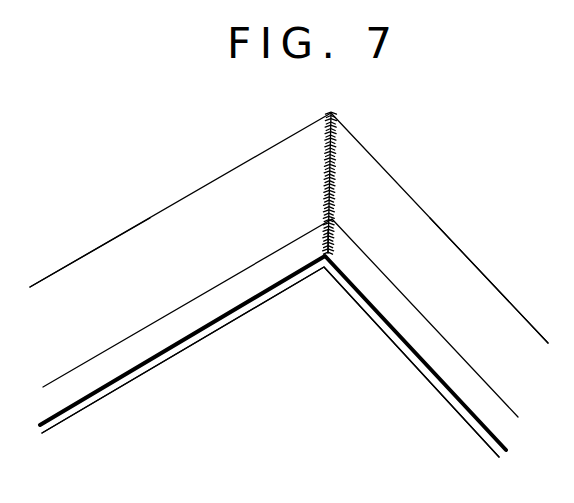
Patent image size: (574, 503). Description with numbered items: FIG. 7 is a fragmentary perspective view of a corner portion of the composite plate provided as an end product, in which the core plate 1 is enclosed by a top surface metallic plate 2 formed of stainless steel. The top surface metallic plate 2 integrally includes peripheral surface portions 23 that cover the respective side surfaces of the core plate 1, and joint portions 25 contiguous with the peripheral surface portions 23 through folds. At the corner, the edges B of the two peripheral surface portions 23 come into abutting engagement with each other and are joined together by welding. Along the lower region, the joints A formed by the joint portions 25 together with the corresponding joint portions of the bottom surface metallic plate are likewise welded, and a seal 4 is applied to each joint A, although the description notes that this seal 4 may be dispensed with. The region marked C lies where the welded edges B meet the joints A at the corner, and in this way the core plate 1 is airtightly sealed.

The top surface metallic plate 2 is at (165, 200).
The peripheral surface portions 23 is at (92, 271).
The edges B is at (335, 173).
The corner joint region C is at (316, 243).
The joints A is at (226, 333).
The seal 4 is at (177, 353).
The joint portions 25 is at (100, 373).
The core plate 1 is at (307, 479).